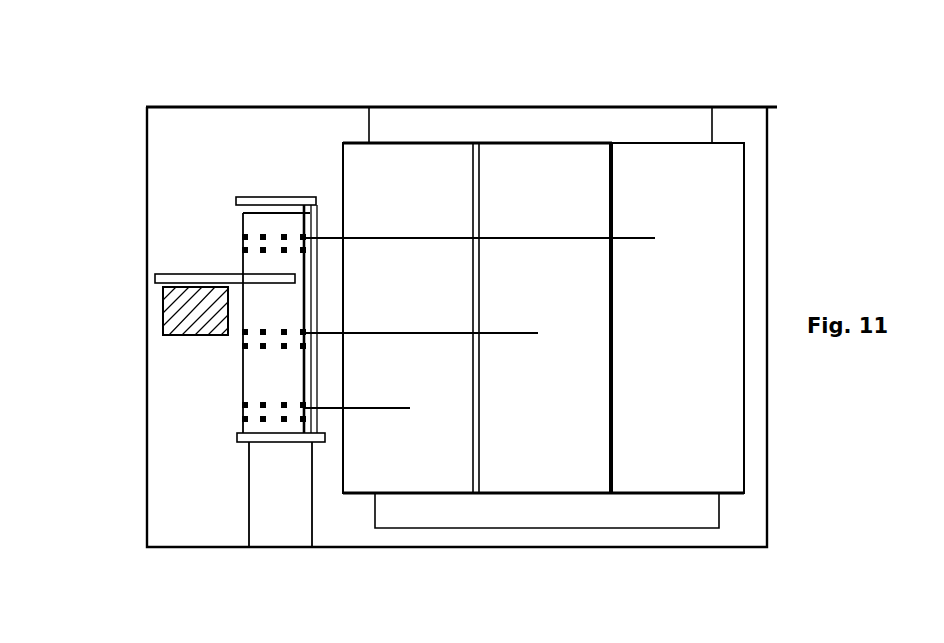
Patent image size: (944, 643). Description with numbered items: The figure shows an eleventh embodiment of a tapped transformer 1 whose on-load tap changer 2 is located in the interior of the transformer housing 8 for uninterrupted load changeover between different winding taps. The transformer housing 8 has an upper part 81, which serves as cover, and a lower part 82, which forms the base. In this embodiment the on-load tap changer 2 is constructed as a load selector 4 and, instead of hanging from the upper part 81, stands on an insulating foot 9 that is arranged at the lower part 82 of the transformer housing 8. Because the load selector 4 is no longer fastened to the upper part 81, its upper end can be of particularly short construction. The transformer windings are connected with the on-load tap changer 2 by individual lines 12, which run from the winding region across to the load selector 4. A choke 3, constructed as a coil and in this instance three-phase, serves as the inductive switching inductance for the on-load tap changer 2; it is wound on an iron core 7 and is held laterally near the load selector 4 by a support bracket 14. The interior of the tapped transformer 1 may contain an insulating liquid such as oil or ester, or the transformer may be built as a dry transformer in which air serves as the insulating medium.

The tapped transformer 1 is at (775, 232).
The on-load tap changer 2 is at (232, 178).
The choke 3 is at (163, 335).
The load selector 4 is at (268, 207).
The iron core 7 is at (165, 292).
The transformer housing 8 is at (527, 106).
The upper part 81 is at (412, 106).
The lower part 82 is at (345, 538).
The insulating foot 9 is at (277, 457).
The lines 12 is at (578, 235).
The support bracket 14 is at (177, 283).